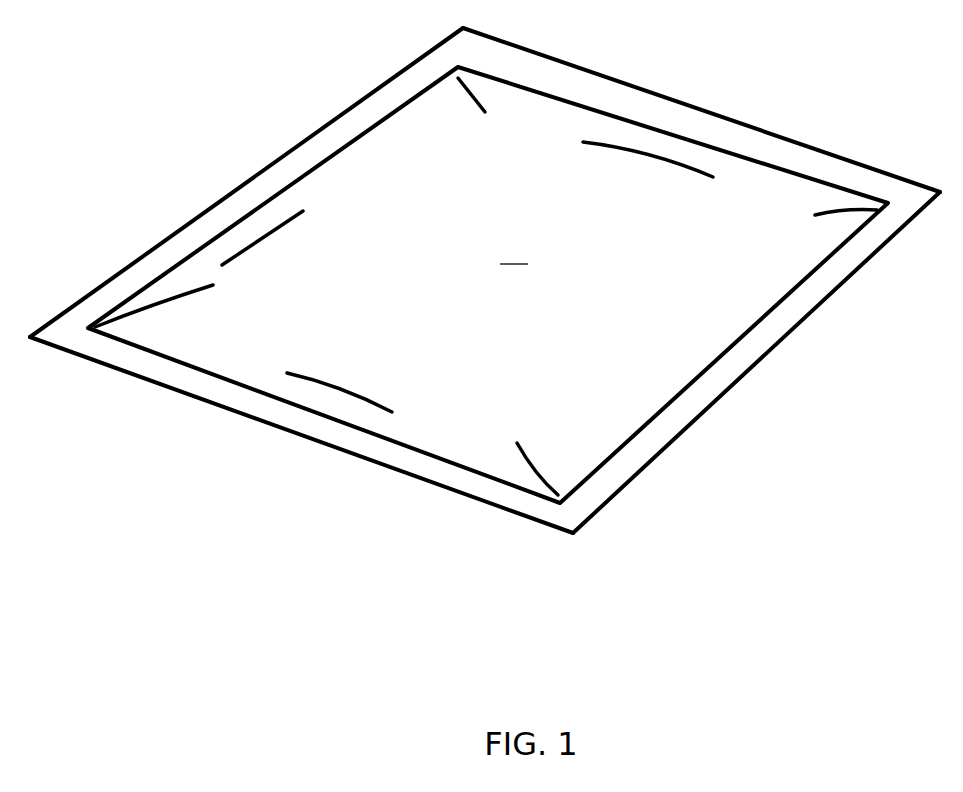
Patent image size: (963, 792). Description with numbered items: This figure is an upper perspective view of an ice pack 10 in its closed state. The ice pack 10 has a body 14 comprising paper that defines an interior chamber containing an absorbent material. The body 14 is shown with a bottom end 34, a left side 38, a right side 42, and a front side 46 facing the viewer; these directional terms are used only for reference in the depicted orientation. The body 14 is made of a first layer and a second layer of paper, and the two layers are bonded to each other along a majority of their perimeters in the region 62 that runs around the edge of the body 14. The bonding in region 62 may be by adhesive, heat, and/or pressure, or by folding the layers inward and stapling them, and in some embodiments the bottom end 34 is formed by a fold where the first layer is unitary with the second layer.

The ice pack 10 is at (266, 77).
The body 14 is at (555, 122).
The bottom end 34 is at (342, 455).
The left side 38 is at (237, 192).
The right side 42 is at (750, 372).
The front side 46 is at (514, 254).
The region 62 is at (670, 118).